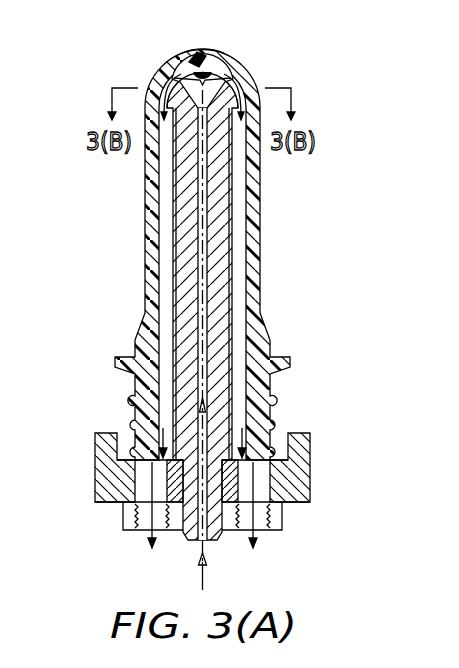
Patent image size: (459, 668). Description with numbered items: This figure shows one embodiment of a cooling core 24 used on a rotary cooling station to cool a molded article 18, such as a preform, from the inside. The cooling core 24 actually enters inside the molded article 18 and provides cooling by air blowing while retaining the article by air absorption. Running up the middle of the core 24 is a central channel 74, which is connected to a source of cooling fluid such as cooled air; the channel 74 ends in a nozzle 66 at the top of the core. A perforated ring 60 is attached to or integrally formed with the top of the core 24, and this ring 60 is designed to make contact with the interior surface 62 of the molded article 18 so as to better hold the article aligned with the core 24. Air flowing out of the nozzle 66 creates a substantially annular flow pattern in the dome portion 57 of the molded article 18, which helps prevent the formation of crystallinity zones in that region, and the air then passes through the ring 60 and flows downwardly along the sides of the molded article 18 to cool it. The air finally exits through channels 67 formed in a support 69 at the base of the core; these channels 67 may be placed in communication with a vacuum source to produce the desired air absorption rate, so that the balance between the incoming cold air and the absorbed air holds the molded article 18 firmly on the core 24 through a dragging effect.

The molded article 18 is at (150, 277).
The cooling core 24 is at (178, 215).
The dome portion 57 is at (204, 50).
The perforated ring 60 is at (174, 70).
The interior surface 62 is at (196, 51).
The nozzle 66 is at (212, 94).
The channels 67 is at (148, 478).
The support 69 is at (298, 433).
The central channel 74 is at (203, 216).